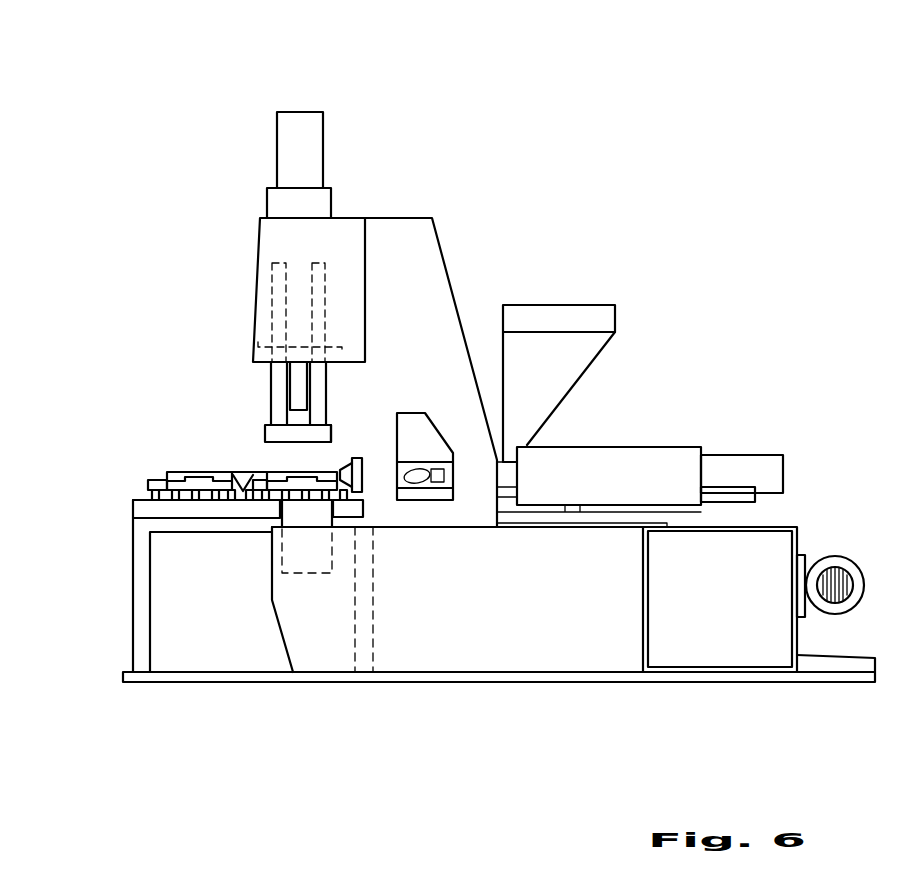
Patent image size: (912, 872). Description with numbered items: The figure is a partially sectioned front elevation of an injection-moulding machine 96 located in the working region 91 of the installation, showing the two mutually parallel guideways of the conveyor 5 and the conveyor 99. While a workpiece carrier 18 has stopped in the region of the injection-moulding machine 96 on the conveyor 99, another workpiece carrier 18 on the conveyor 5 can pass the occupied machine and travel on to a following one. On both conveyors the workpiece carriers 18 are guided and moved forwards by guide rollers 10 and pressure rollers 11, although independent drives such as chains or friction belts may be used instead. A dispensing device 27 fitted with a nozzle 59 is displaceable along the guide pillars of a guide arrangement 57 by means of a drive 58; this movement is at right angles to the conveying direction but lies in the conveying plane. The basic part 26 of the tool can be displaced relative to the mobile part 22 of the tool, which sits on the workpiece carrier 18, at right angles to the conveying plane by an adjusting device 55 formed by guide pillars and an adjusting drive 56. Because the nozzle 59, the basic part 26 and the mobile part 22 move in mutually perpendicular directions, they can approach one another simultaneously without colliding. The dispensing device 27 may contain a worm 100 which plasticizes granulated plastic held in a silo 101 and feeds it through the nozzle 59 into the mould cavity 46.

The injection-moulding machine 96 is at (445, 124).
The adjusting drive 56 is at (303, 398).
The adjusting device 55 is at (267, 389).
The mould cavity 46 is at (265, 447).
The basic part of the tool 26 is at (335, 427).
The pressure rollers 11 is at (186, 466).
The guide rollers 10 is at (150, 487).
The workpiece carrier 18 is at (195, 497).
The mobile part of the tool 22 is at (248, 478).
The working region 91 is at (226, 429).
The conveyor 5 is at (238, 473).
The nozzle 59 is at (342, 474).
The conveyor 99 is at (317, 504).
The worm 100 is at (433, 493).
The silo 101 is at (565, 315).
The dispensing device 27 is at (585, 465).
The drive 58 is at (770, 470).
The guide arrangement 57 is at (718, 492).